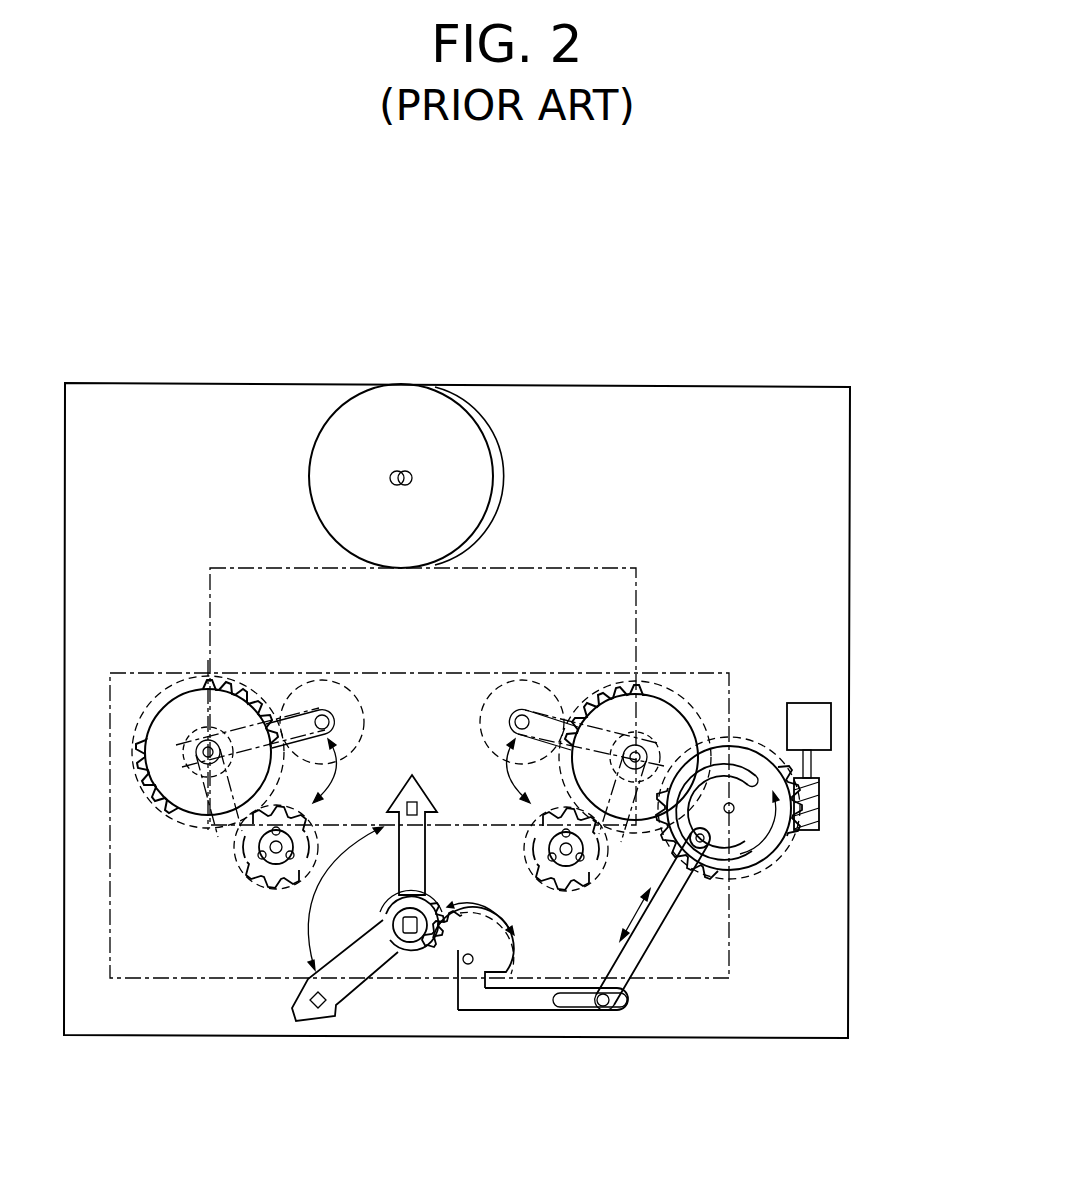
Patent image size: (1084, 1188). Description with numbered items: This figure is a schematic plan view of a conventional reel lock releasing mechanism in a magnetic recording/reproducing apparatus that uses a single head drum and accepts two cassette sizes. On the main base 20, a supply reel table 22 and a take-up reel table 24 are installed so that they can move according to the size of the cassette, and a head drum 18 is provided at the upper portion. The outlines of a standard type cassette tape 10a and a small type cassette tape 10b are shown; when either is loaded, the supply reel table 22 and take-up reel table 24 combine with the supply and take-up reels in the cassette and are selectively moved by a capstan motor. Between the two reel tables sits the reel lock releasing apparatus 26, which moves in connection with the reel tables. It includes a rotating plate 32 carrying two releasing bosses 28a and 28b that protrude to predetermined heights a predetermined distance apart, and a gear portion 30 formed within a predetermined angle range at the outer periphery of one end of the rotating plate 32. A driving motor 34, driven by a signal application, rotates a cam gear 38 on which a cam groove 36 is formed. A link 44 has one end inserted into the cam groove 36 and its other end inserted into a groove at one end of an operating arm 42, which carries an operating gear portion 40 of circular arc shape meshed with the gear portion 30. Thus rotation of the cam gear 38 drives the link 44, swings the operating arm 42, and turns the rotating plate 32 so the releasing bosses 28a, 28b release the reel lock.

The standard type cassette tape 10a is at (730, 972).
The small type cassette tape 10b is at (636, 581).
The head drum 18 is at (427, 428).
The main base 20 is at (805, 1040).
The supply reel table 22 is at (273, 888).
The take-up reel table 24 is at (563, 880).
The reel lock releasing apparatus 26 is at (413, 990).
The releasing boss 28a is at (390, 950).
The releasing boss 28b is at (314, 1003).
The gear portion 30 is at (428, 947).
The rotating plate 32 is at (338, 1008).
The driving motor 34 is at (831, 724).
The cam groove 36 is at (752, 738).
The cam gear 38 is at (772, 862).
The operating gear portion 40 is at (485, 1012).
The operating arm 42 is at (622, 1008).
The link 44 is at (688, 918).